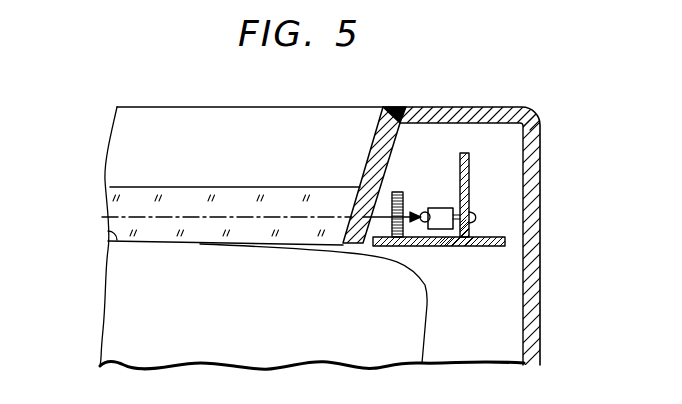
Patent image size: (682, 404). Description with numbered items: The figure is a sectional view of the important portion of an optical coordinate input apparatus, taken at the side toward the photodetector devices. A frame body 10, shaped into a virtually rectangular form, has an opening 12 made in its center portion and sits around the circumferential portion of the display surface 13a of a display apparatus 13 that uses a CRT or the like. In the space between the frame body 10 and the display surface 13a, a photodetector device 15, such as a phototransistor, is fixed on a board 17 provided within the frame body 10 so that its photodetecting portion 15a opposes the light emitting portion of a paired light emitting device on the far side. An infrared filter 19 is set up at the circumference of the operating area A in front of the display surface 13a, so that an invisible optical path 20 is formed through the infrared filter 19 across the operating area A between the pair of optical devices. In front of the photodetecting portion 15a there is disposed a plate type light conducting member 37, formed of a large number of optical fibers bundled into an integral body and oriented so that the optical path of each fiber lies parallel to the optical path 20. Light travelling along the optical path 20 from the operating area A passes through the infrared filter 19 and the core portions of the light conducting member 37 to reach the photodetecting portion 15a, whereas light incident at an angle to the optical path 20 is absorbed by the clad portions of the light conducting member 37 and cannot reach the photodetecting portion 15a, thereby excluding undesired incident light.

The frame body 10 is at (533, 126).
The opening 12 is at (262, 190).
The display apparatus 13 is at (118, 302).
The display surface 13a is at (108, 231).
The photodetector device 15 is at (444, 212).
The photodetecting portion 15a is at (423, 207).
The board 17 is at (471, 172).
The infrared filter 19 is at (360, 200).
The optical path 20 is at (205, 218).
The light conducting member 37 is at (402, 250).
The operating area A is at (130, 200).